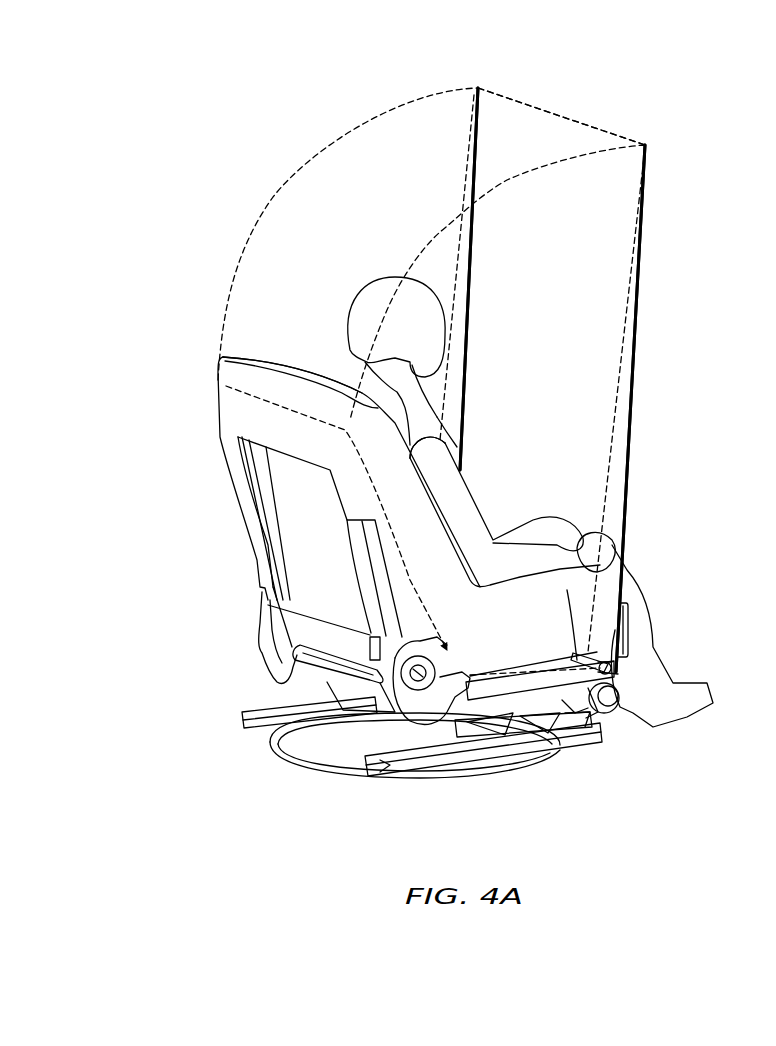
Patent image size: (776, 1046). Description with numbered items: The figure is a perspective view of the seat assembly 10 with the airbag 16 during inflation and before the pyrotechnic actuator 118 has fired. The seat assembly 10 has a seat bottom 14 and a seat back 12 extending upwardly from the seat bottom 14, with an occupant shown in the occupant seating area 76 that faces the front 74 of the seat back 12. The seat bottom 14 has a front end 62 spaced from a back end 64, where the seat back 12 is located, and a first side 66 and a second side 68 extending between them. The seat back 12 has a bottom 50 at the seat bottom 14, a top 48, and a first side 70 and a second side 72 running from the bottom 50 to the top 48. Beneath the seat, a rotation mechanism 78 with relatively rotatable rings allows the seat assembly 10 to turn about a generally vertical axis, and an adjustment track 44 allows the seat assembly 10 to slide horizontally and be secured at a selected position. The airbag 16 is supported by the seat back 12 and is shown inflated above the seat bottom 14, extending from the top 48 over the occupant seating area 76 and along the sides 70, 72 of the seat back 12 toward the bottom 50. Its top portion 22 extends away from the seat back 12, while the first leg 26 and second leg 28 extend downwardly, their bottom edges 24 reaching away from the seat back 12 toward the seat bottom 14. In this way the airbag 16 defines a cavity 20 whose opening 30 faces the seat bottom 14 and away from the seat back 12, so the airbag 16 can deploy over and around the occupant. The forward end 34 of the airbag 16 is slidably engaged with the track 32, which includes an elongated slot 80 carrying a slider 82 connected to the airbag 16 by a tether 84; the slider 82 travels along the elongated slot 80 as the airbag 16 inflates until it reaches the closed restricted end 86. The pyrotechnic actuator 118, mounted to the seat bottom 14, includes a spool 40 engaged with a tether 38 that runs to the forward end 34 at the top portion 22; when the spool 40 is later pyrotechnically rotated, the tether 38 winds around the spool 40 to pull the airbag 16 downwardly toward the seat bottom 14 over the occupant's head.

The seat assembly 10 is at (185, 492).
The seat back 12 is at (300, 490).
The seat bottom 14 is at (487, 690).
The airbag 16 is at (275, 197).
The cavity 20 is at (675, 168).
The top portion 22 is at (380, 160).
The bottom edges 24 is at (555, 660).
The first leg 26 is at (577, 260).
The second leg 28 is at (480, 152).
The opening 30 is at (603, 108).
The track 32 is at (515, 695).
The forward end 34 is at (632, 643).
The tether 38 is at (637, 372).
The spool 40 is at (607, 703).
The adjustment track 44 is at (245, 718).
The top 48 is at (287, 352).
The bottom 50 is at (470, 682).
The front end 62 is at (618, 668).
The back end 64 is at (596, 648).
The first side 66 is at (427, 740).
The second side 68 is at (250, 655).
The first side 70 is at (278, 606).
The second side 72 is at (235, 558).
The front 74 is at (445, 440).
The occupant seating area 76 is at (310, 415).
The rotation mechanism 78 is at (265, 765).
The elongated slot 80 is at (540, 702).
The slider 82 is at (612, 670).
The tether 84 is at (567, 713).
The restricted end 86 is at (612, 662).
The pyrotechnic actuator 118 is at (613, 717).